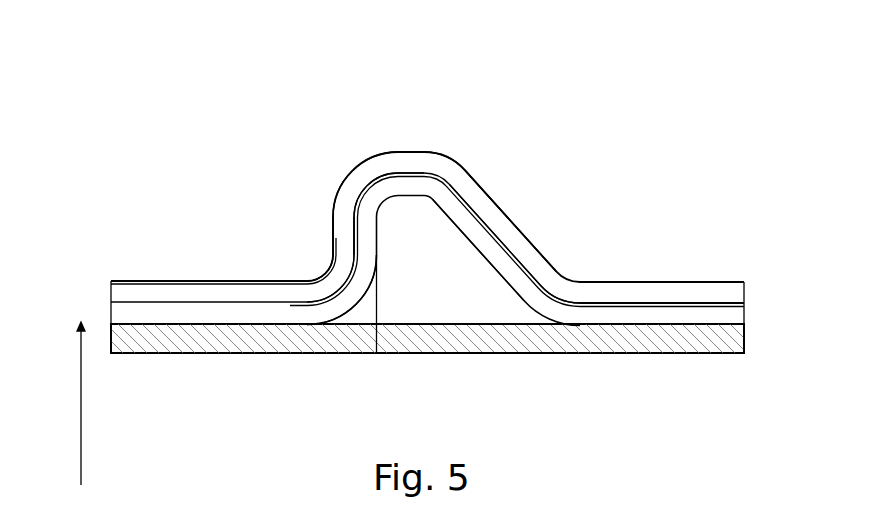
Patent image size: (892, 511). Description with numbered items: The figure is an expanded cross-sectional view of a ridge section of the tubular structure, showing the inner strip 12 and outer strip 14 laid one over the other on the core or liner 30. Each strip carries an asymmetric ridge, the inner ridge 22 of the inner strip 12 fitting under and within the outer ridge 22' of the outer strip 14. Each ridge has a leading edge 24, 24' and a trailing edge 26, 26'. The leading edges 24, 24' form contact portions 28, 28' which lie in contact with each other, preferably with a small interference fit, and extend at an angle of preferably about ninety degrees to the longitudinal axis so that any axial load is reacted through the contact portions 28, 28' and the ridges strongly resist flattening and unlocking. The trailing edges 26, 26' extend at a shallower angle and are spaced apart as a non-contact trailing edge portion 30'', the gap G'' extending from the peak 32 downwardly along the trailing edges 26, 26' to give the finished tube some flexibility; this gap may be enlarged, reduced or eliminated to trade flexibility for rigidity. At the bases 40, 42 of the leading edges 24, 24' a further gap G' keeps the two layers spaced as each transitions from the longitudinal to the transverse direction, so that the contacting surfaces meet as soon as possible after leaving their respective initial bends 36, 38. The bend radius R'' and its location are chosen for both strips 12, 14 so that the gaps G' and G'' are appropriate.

The inner strip 12 is at (682, 315).
The outer strip 14 is at (667, 290).
The ridge 22 is at (427, 235).
The ridge 22' is at (427, 198).
The leading edge 24 is at (426, 249).
The leading edge 24' is at (235, 209).
The trailing edge 26 is at (487, 315).
The trailing edge 26' is at (542, 220).
The contact portion 28 is at (383, 168).
The contact portion 28' is at (378, 180).
The core or liner 30 is at (480, 378).
The non-contact trailing edge portion 30'' is at (640, 262).
The peak 32 is at (418, 152).
The initial bend 36 is at (360, 300).
The initial bend 38 is at (318, 270).
The base of leading edge 40 is at (318, 307).
The base of leading edge 42 is at (300, 281).
The gap G' is at (309, 324).
The gap G'' is at (518, 227).
The bend radius R'' is at (71, 403).